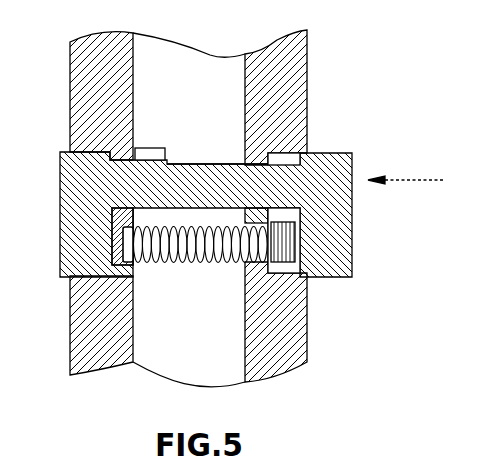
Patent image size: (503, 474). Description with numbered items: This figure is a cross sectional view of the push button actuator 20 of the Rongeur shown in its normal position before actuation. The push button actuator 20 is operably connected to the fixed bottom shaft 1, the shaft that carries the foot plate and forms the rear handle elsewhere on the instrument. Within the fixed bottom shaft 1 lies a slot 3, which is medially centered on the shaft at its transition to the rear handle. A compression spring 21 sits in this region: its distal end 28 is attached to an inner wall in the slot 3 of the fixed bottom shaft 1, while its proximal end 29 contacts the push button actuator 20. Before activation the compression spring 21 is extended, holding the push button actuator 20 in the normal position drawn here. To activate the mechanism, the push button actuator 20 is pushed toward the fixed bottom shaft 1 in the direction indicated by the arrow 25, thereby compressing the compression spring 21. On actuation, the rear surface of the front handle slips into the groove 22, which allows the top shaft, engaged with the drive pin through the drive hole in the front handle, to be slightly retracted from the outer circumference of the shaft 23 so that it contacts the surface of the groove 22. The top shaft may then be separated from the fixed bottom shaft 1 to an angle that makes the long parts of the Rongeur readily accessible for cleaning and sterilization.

The fixed bottom shaft 1 is at (308, 70).
The slot 3 is at (193, 372).
The push button actuator 20 is at (345, 210).
The compression spring 21 is at (201, 264).
The groove 22 is at (203, 163).
The shaft 23 is at (151, 152).
The arrow 25 is at (415, 178).
The distal end 28 is at (112, 237).
The proximal end 29 is at (318, 248).